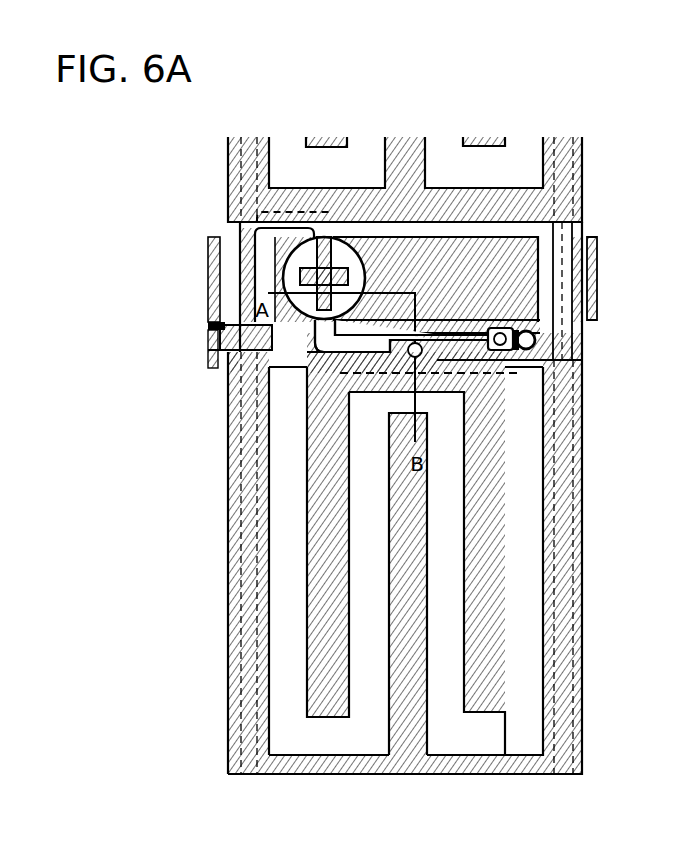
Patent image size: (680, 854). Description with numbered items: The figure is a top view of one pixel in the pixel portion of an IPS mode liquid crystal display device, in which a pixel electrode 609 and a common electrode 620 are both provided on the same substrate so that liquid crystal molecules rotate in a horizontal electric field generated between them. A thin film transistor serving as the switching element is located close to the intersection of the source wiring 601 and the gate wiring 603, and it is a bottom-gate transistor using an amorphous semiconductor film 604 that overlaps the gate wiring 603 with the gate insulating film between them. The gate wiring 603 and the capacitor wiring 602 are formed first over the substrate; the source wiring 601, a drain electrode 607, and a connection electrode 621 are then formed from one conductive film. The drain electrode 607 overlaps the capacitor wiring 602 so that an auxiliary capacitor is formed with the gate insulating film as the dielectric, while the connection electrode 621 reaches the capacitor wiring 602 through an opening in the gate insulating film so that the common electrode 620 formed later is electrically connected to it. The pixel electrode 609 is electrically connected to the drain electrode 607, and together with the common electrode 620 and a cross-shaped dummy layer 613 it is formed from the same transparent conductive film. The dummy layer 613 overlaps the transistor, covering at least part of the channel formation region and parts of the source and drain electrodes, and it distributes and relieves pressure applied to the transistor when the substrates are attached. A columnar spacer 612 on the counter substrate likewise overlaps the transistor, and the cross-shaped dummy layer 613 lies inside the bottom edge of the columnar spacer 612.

The source wiring 601 is at (240, 262).
The capacitor wiring 602 is at (230, 392).
The gate wiring 603 is at (480, 270).
The amorphous semiconductor film 604 is at (300, 274).
The drain electrode 607 is at (258, 316).
The pixel electrode 609 is at (325, 472).
The columnar spacer 612 is at (318, 240).
The dummy layer 613 is at (300, 238).
The common electrode 620 is at (410, 530).
The connection electrode 621 is at (510, 360).